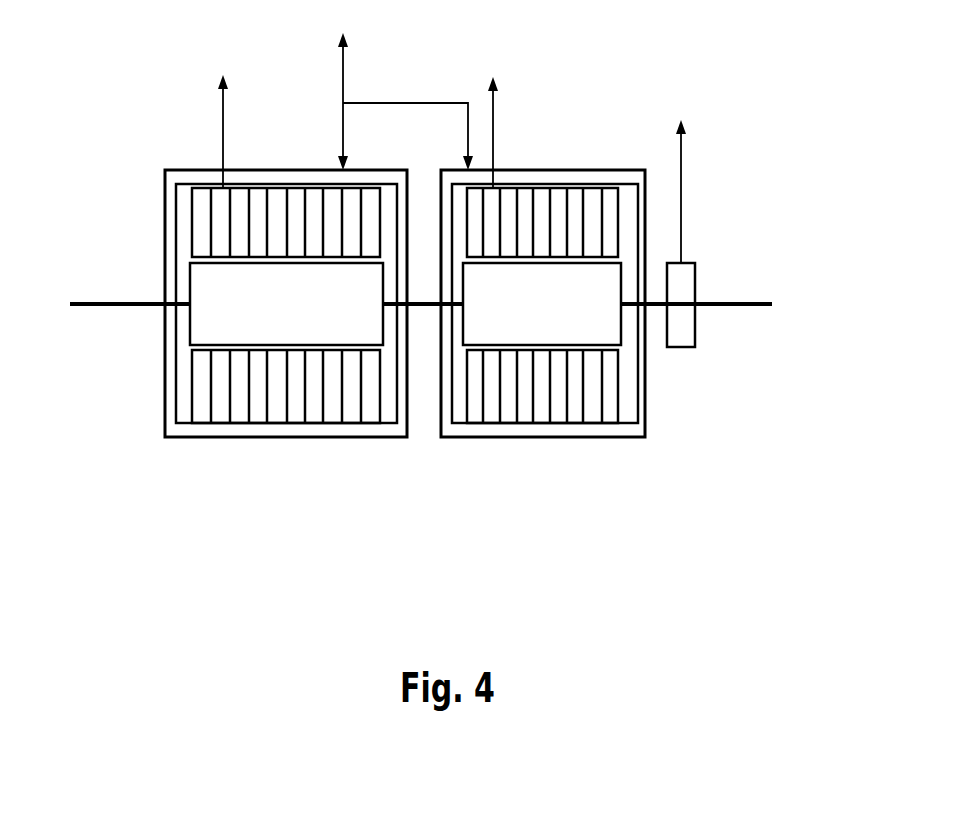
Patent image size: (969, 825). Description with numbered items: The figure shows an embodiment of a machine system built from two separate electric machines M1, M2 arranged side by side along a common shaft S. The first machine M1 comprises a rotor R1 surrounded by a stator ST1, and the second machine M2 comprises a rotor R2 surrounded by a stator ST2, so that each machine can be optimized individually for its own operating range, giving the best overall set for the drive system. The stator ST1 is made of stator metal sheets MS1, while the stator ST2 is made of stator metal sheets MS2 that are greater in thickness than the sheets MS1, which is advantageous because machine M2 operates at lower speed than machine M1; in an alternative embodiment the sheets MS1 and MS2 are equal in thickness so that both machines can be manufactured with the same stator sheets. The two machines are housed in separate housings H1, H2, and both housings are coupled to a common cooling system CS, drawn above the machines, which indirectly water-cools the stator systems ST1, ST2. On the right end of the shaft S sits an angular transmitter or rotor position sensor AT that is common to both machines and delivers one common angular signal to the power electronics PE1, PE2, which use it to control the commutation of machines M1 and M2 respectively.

The shaft S is at (85, 301).
The machine M1 is at (237, 394).
The machine M2 is at (606, 394).
The housing H1 is at (240, 437).
The housing H2 is at (515, 437).
The stator ST1 is at (172, 400).
The stator ST2 is at (645, 390).
The stator metal sheets MS1 is at (325, 400).
The stator metal sheets MS2 is at (567, 400).
The rotor R1 is at (295, 317).
The rotor R2 is at (560, 317).
The angular transmitter AT is at (695, 327).
The power electronics PE1 is at (501, 154).
The power electronics PE2 is at (496, 116).
The cooling system CS is at (400, 85).